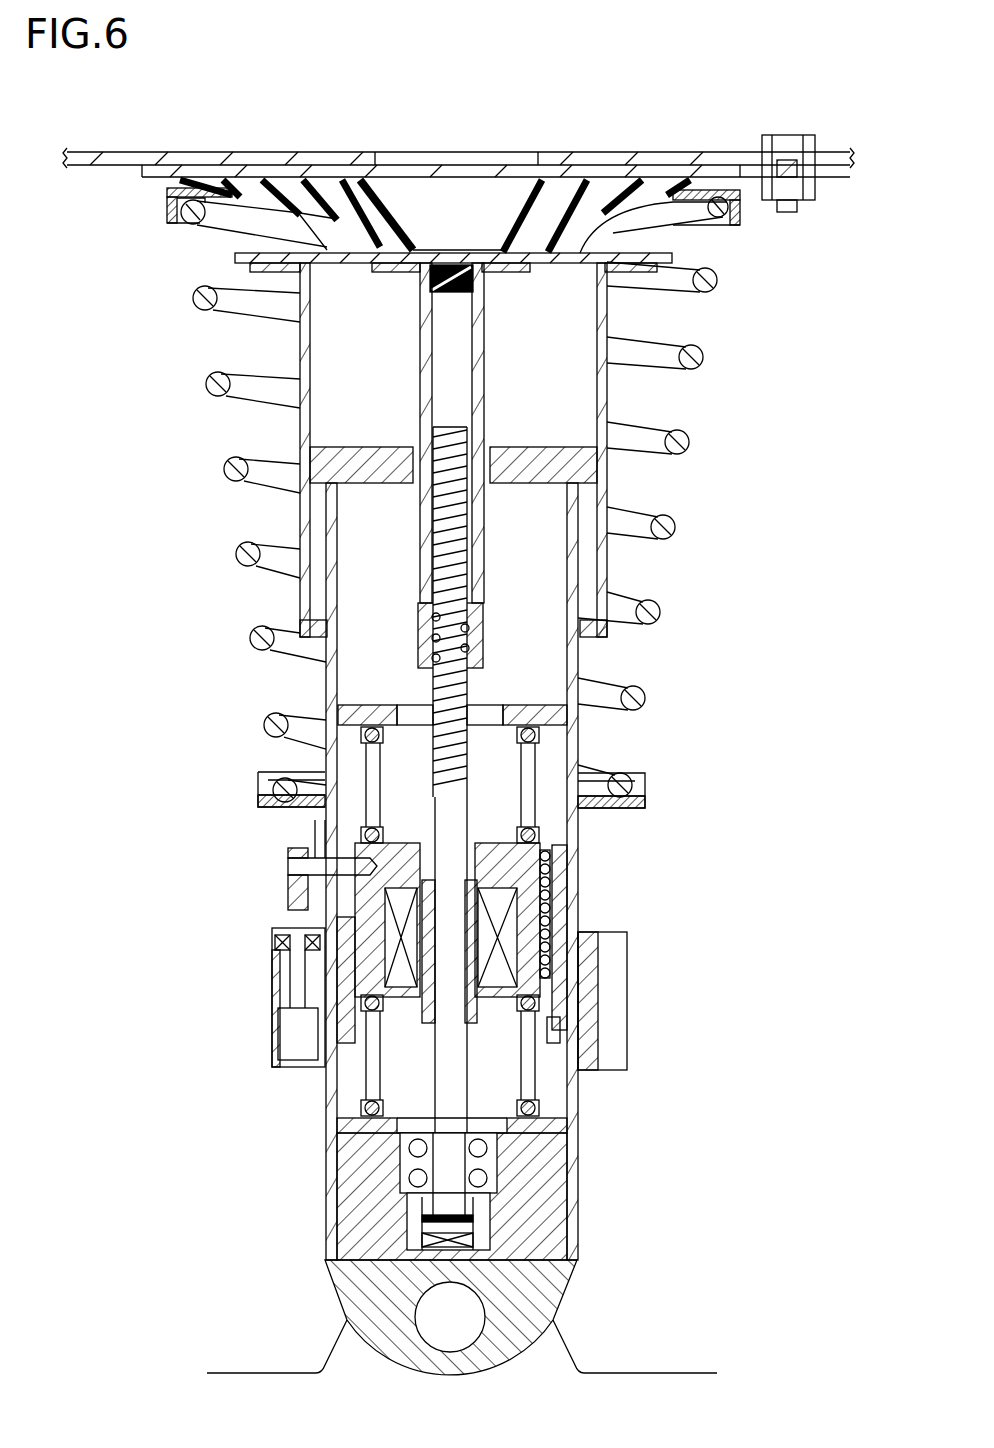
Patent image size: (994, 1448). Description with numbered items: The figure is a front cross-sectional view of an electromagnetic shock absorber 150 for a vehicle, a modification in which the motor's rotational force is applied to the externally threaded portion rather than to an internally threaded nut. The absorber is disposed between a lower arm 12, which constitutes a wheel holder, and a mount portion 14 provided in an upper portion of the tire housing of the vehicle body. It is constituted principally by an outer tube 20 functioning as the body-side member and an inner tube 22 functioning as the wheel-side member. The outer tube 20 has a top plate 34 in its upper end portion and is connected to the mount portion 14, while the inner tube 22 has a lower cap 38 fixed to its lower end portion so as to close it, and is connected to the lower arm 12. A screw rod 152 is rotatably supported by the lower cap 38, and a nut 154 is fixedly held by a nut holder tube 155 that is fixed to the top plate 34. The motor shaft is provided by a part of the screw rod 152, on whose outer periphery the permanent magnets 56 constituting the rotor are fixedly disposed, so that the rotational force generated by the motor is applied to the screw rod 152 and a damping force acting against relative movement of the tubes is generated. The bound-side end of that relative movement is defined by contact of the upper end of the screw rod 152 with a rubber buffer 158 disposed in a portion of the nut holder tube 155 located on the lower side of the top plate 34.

The mount portion 14 is at (252, 149).
The top plate 34 is at (657, 258).
The rubber buffer 158 is at (457, 280).
The outer tube 20 is at (719, 301).
The electromagnetic shock absorber 150 is at (762, 406).
The nut holder tube 155 is at (425, 345).
The screw rod 152 is at (443, 438).
The nut 154 is at (483, 637).
The inner tube 22 is at (699, 875).
The permanent magnets 56 is at (470, 1000).
The lower cap 38 is at (545, 1165).
The lower arm 12 is at (617, 1373).